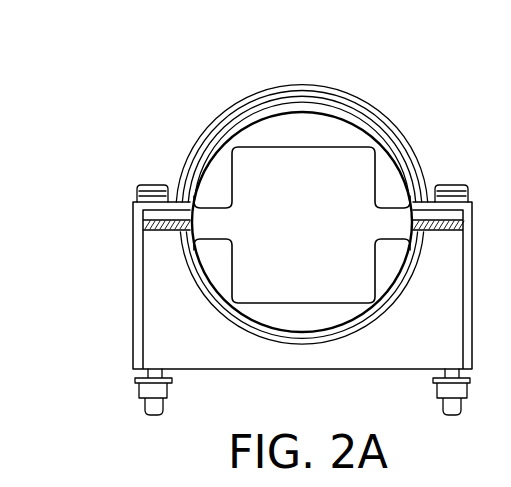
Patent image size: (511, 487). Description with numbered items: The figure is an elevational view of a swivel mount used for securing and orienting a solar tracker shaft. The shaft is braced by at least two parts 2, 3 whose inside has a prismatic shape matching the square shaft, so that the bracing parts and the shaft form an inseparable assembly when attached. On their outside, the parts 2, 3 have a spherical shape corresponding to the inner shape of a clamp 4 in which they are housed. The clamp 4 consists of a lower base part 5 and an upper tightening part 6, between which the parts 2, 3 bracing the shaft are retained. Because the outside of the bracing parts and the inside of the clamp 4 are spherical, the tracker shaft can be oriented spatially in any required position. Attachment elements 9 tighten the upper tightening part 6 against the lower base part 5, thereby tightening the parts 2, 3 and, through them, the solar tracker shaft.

The part bracing the shaft 2 is at (292, 132).
The part bracing the shaft 3 is at (295, 310).
The clamp 4 is at (194, 115).
The lower base part 5 is at (167, 279).
The upper tightening part 6 is at (338, 87).
The attachment elements 9 is at (143, 187).